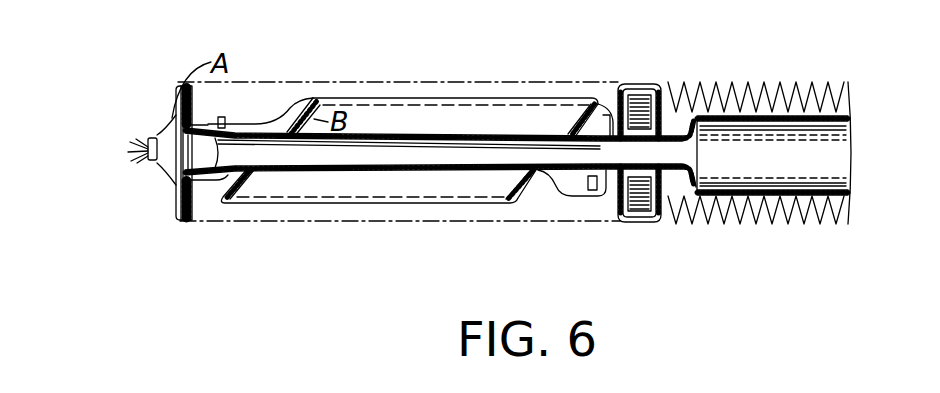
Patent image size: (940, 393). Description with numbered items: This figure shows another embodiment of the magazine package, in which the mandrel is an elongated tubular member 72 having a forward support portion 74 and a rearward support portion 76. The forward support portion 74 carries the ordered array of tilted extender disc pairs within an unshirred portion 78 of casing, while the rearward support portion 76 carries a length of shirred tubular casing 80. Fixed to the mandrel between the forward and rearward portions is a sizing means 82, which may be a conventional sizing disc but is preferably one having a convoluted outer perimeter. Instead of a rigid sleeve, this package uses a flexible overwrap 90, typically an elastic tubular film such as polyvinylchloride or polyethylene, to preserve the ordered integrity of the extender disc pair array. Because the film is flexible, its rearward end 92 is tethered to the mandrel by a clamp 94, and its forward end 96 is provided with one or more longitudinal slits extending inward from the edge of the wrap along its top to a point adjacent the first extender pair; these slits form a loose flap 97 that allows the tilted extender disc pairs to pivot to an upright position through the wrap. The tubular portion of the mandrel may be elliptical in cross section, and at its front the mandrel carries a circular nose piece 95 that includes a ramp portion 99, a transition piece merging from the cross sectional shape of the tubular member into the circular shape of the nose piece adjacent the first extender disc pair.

The elongated tubular member 72 is at (567, 176).
The forward support portion 74 is at (338, 170).
The rearward support portion 76 is at (833, 192).
The unshirred portion of casing 78 is at (365, 96).
The shirred tubular casing 80 is at (798, 90).
The sizing means 82 is at (656, 93).
The flexible overwrap 90 is at (450, 207).
The rearward end of overwrap 92 is at (567, 100).
The clamp 94 is at (615, 120).
The nose piece 95 is at (152, 137).
The forward end of overwrap 96 is at (207, 186).
The loose flap 97 is at (251, 119).
The ramp portion 99 is at (227, 130).